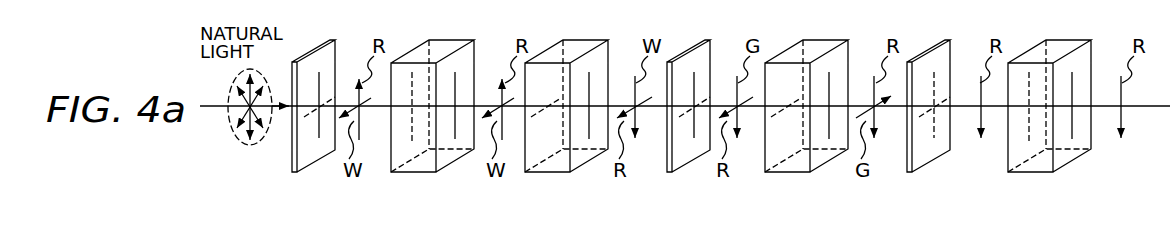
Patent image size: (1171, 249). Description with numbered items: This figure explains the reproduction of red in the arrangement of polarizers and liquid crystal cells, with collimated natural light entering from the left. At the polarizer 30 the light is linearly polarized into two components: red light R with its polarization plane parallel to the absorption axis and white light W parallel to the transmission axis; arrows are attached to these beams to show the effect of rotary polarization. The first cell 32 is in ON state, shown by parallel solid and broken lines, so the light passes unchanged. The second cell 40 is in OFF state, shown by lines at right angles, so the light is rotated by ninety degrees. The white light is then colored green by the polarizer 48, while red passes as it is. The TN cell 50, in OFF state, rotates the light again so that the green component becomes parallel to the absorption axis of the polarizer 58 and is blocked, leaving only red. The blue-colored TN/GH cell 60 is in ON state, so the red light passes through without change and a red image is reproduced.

The polarizer 30 is at (299, 172).
The first cell 32 is at (406, 172).
The second cell 40 is at (542, 172).
The polarizer 48 is at (664, 172).
The TN cell 50 is at (784, 172).
The polarizer 58 is at (909, 172).
The TN/GH cell 60 is at (1026, 172).